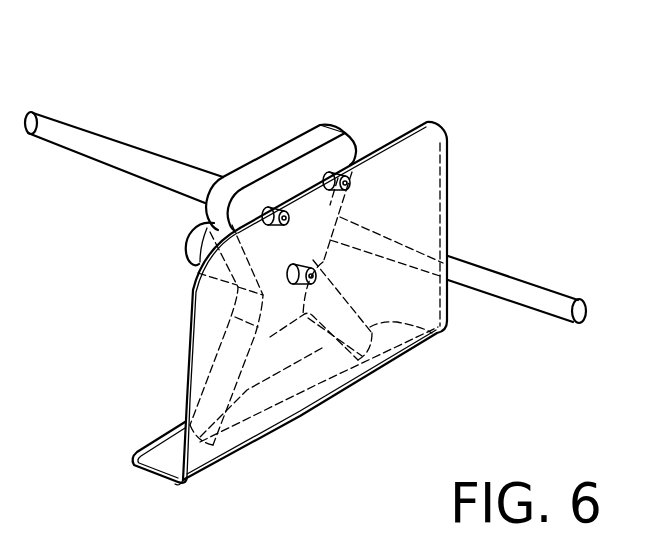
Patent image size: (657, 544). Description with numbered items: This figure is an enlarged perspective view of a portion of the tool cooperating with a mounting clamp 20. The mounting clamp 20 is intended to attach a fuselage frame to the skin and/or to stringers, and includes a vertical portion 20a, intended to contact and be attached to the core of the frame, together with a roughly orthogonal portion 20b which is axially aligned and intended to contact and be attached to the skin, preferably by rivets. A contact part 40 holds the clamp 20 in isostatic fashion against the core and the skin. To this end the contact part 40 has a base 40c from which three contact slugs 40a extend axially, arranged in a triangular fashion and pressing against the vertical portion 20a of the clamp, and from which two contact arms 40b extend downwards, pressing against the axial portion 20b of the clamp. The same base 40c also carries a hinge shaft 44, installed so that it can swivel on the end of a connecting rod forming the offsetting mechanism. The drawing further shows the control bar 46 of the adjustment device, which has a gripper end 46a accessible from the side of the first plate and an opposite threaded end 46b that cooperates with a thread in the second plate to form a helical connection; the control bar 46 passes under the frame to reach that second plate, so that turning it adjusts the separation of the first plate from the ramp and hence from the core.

The mounting clamp 20 is at (432, 142).
The vertical portion 20a is at (428, 227).
The orthogonal portion 20b is at (153, 457).
The contact part 40 is at (293, 155).
The contact slugs 40a is at (290, 220).
The contact arms 40b is at (350, 337).
The base 40c is at (257, 173).
The hinge shaft 44 is at (198, 247).
The control bar 46 is at (566, 294).
The gripper end 46a is at (47, 123).
The threaded end 46b is at (563, 313).